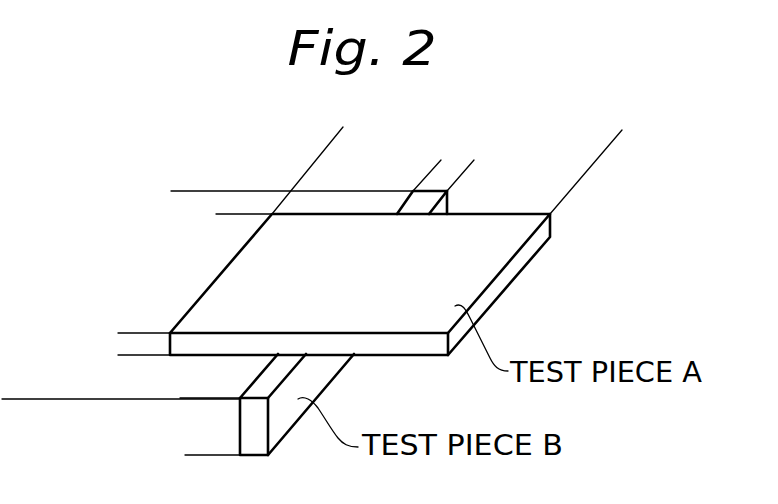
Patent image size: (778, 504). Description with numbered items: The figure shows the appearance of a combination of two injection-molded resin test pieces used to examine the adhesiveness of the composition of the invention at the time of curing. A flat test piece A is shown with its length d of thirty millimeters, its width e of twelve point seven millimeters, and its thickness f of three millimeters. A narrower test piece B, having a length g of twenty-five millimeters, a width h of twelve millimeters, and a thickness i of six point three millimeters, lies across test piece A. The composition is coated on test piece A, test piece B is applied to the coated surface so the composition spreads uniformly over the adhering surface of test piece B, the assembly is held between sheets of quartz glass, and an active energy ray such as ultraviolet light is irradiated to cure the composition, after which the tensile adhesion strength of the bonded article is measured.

The length of test piece A d is at (613, 141).
The width of test piece A e is at (231, 215).
The thickness of test piece A f is at (131, 334).
The length of test piece B g is at (24, 399).
The width of test piece B h is at (204, 399).
The thickness of test piece B i is at (493, 170).